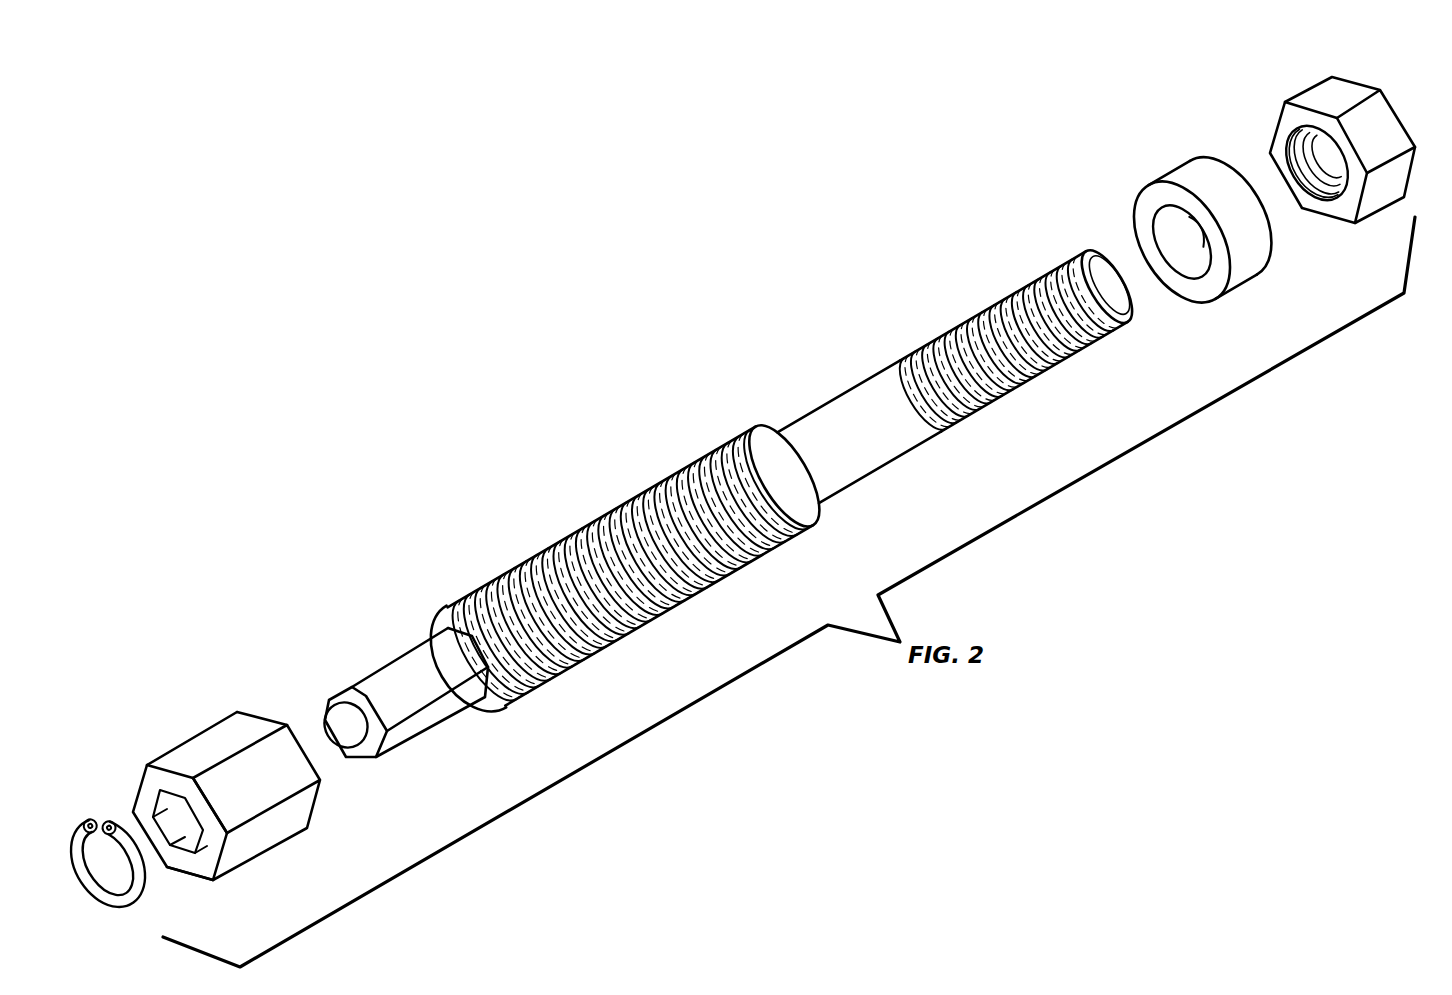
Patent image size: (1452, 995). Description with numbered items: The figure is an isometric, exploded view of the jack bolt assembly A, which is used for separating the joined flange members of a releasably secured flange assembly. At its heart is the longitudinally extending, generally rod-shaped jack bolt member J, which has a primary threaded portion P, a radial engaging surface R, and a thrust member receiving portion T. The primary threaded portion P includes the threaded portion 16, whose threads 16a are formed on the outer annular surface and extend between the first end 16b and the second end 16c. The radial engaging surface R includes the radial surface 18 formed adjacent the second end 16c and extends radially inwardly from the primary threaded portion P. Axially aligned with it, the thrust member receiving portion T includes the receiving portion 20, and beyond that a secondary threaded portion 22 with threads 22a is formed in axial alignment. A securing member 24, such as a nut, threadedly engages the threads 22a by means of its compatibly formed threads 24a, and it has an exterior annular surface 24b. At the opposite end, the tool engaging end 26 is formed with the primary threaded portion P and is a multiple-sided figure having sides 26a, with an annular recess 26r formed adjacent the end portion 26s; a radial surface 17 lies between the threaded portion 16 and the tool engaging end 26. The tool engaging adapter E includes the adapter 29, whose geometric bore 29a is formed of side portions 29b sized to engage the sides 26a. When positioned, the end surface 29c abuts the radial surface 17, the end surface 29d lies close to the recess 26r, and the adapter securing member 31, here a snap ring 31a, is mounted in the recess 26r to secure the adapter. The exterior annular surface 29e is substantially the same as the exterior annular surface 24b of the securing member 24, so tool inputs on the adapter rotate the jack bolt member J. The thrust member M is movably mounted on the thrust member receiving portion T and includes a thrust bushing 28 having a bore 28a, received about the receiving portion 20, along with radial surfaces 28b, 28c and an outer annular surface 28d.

The jack bolt assembly A is at (470, 358).
The threaded portion 16 is at (515, 560).
The threads 16a is at (590, 660).
The first end 16b is at (525, 705).
The second end 16c is at (795, 540).
The radial surface 17 is at (420, 620).
The radial surface 18 is at (818, 506).
The receiving portion 20 is at (916, 438).
The secondary threaded portion 22 is at (970, 318).
The threads 22a is at (1040, 375).
The primary threaded portion P is at (598, 512).
The radial engaging surface R is at (770, 430).
The thrust member receiving portion T is at (833, 398).
The jack bolt member J is at (866, 384).
The tool engaging end 26 is at (400, 642).
The sides 26a is at (378, 675).
The annular recess 26r is at (350, 688).
The end portion 26s is at (353, 740).
The adapter 29 is at (190, 727).
The geometric bore 29a is at (157, 806).
The side portions 29b is at (176, 832).
The end surface 29c is at (250, 708).
The end surface 29d is at (208, 866).
The exterior annular surface 29e is at (284, 787).
The tool engaging adapter E is at (160, 752).
The adapter securing member 31 is at (80, 877).
The snap ring 31a is at (117, 897).
The thrust bushing 28 is at (1150, 178).
The bore 28a is at (1188, 255).
The radial surface 28b is at (1217, 157).
The radial surface 28c is at (1142, 213).
The outer annular surface 28d is at (1250, 255).
The thrust member M is at (1183, 152).
The securing member 24 is at (1362, 80).
The threads 24a is at (1330, 190).
The exterior annular surface 24b is at (1382, 130).